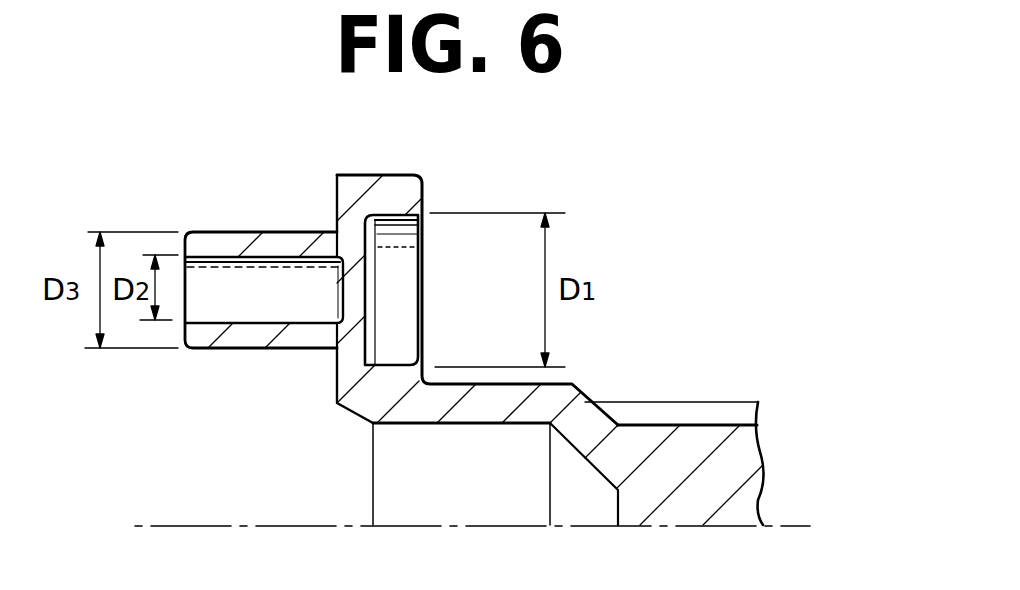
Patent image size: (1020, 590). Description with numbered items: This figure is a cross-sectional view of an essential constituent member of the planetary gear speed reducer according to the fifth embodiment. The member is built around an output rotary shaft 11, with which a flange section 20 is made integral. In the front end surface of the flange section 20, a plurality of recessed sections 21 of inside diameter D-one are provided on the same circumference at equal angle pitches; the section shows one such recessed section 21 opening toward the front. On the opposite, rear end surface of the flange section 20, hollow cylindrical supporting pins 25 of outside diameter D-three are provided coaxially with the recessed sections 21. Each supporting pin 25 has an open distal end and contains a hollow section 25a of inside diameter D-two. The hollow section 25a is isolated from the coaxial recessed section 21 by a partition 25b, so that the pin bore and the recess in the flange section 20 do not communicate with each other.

The output rotary shaft 11 is at (740, 452).
The flange section 20 is at (405, 190).
The recessed section 21 is at (400, 325).
The hollow cylindrical supporting pin 25 is at (242, 243).
The hollow section 25a is at (245, 306).
The partition 25b is at (358, 285).